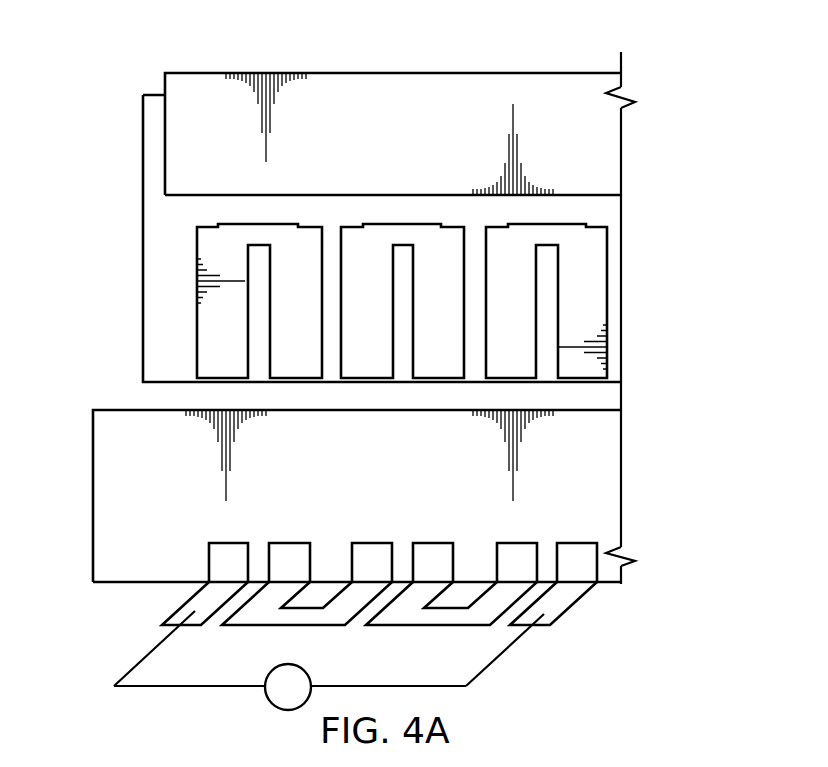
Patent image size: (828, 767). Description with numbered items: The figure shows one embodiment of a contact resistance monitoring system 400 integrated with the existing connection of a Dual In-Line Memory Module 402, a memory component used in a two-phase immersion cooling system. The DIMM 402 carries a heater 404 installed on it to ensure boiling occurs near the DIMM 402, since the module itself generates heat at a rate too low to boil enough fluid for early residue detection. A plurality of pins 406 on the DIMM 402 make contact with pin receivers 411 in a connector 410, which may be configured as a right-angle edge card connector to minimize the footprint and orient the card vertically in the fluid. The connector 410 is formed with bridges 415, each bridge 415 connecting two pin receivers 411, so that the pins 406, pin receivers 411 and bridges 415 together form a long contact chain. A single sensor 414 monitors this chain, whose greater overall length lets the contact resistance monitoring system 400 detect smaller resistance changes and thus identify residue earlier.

The contact resistance monitoring system 400 is at (679, 83).
The Dual In-Line Memory Module 402 is at (380, 238).
The heater 404 is at (165, 133).
The pins 406 is at (597, 283).
The connector 410 is at (93, 496).
The pin receivers 411 is at (375, 657).
The sensor 414 is at (267, 703).
The bridges 415 is at (482, 645).